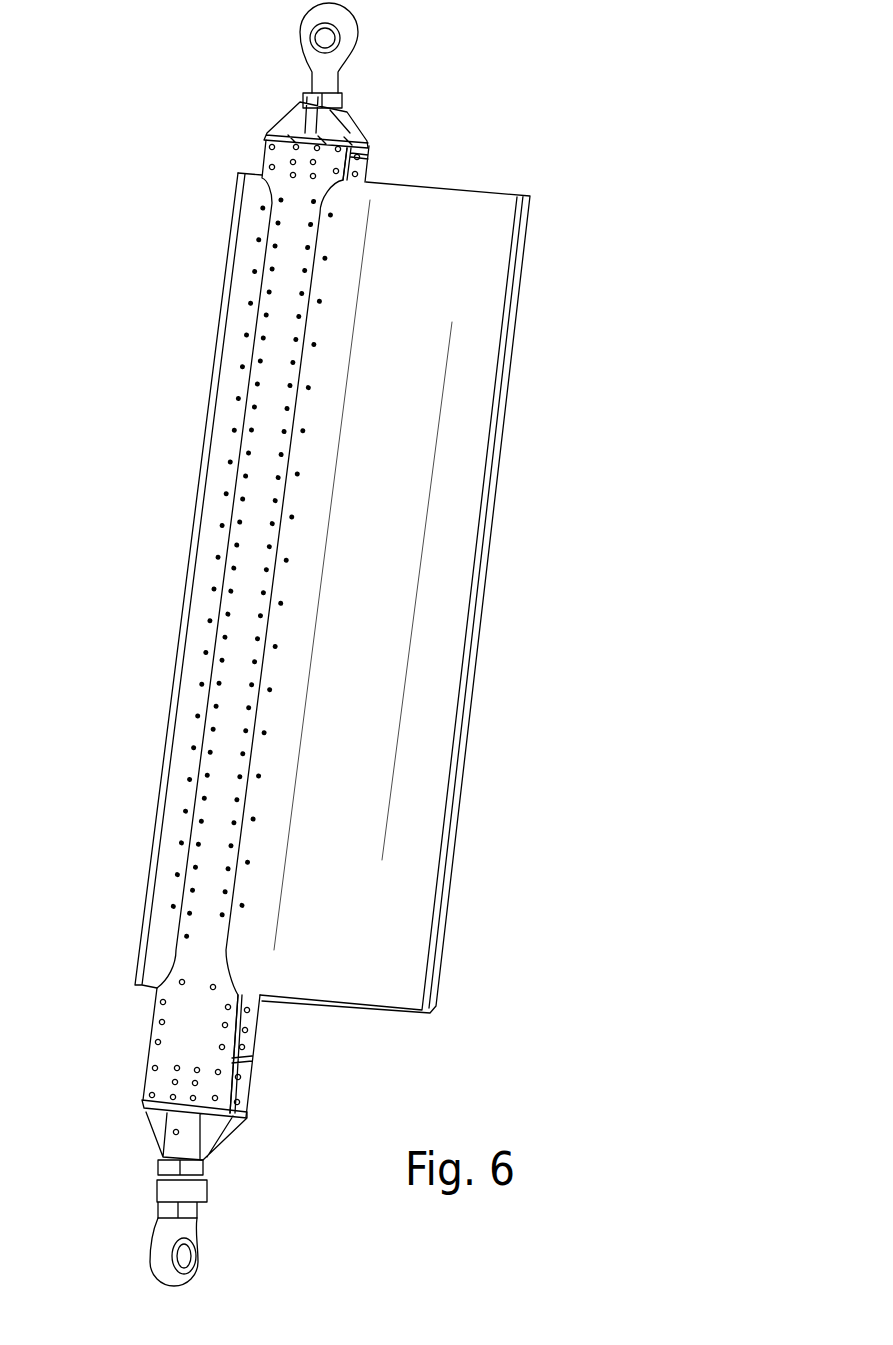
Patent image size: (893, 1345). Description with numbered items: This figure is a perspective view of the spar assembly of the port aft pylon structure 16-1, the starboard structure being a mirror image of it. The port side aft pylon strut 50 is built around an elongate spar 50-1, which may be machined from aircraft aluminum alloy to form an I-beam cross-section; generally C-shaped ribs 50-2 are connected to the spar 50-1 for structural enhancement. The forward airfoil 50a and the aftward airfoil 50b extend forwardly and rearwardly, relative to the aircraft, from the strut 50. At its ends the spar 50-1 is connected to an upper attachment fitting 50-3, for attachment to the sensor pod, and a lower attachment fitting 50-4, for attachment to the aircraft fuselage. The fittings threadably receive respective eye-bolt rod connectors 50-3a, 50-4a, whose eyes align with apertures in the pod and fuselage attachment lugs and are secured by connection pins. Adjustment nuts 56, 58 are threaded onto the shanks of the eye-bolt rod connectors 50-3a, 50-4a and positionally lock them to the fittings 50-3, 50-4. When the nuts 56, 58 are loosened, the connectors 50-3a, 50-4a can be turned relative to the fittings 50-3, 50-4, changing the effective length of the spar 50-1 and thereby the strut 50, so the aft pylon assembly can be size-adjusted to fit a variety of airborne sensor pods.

The port aft pylon structure 16-1 is at (575, 83).
The pylon strut assembly 50 is at (148, 1050).
The elongate spar 50-1 is at (262, 475).
The C-shaped ribs 50-2 is at (370, 166).
The upper attachment fitting 50-3 is at (297, 122).
The eye-bolt rod connector 50-3a is at (357, 38).
The adjustment nut 56 is at (343, 100).
The lower attachment fitting 50-4 is at (215, 1143).
The eye-bolt rod connector 50-4a is at (162, 1255).
The adjustment nut 58 is at (157, 1162).
The forward airfoil 50a is at (195, 632).
The aftward airfoil 50b is at (366, 704).